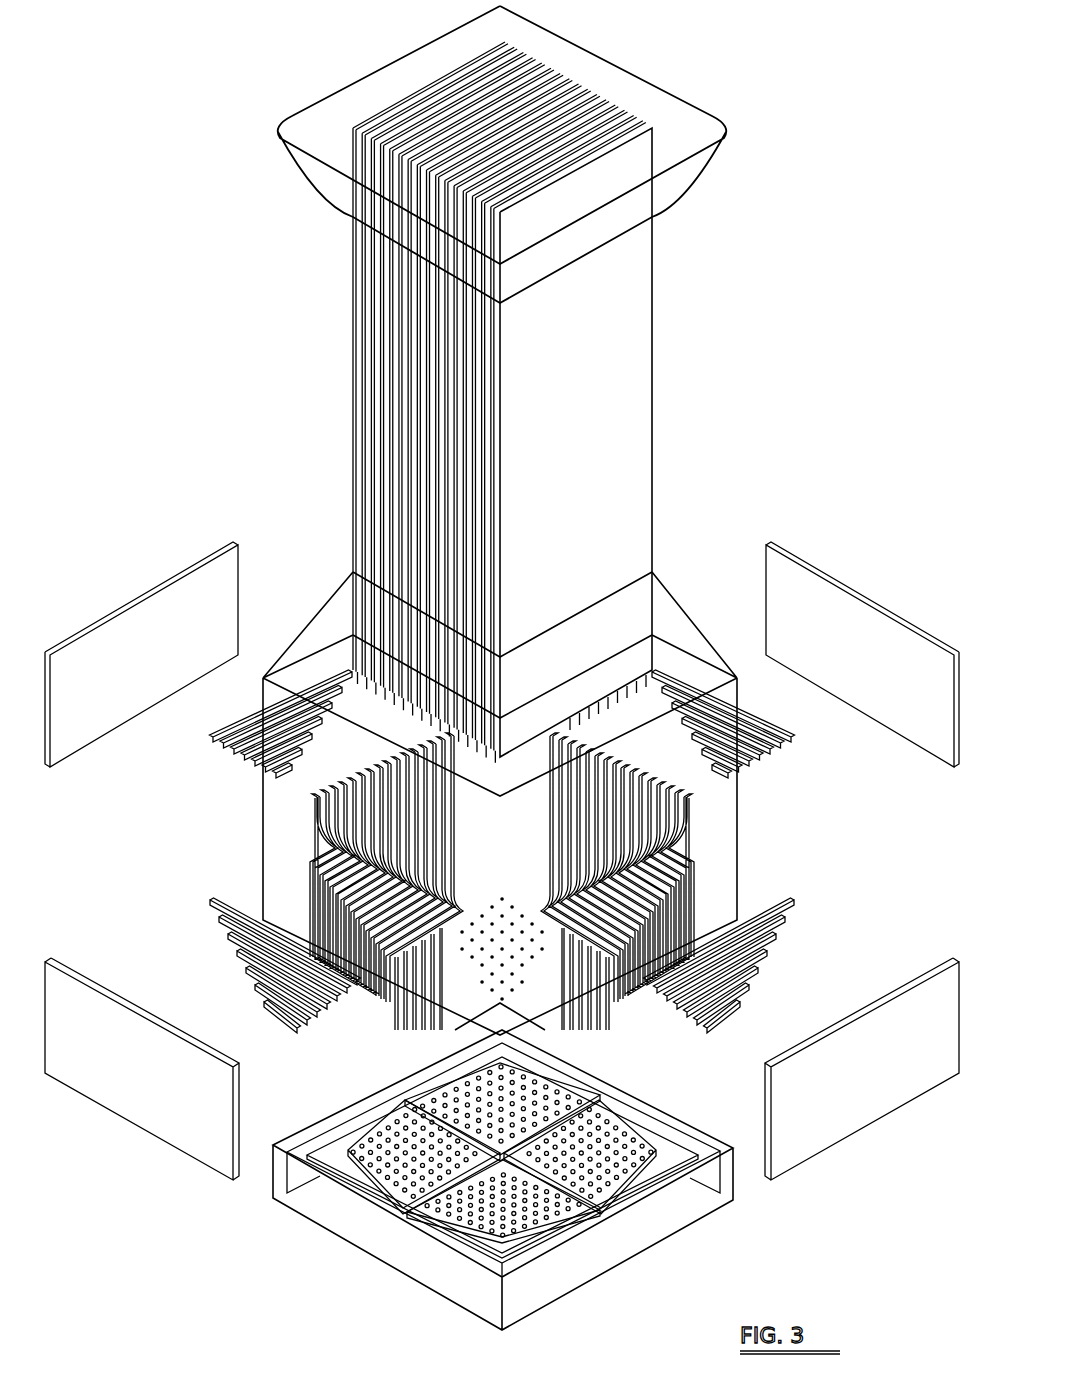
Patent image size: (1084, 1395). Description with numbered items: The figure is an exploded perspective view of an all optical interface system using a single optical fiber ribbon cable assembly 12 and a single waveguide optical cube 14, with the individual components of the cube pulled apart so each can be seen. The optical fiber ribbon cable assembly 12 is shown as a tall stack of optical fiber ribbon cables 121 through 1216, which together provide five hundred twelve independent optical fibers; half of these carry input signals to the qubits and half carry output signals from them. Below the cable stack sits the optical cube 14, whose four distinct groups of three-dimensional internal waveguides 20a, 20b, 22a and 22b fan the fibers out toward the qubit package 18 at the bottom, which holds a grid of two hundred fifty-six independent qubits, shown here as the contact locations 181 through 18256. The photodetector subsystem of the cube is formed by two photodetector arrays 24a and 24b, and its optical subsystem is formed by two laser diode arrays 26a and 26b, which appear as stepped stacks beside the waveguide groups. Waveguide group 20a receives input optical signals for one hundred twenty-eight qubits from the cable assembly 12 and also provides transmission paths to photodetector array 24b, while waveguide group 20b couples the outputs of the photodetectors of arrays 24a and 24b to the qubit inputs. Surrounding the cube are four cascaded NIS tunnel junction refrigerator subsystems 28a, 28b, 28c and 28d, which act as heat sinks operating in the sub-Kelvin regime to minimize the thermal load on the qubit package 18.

The optical fiber ribbon cable assembly 12 is at (315, 313).
The optical fiber ribbon cable 121 is at (478, 56).
The optical fiber ribbon cable 1216 is at (647, 143).
The waveguide optical cube 14 is at (305, 876).
The qubit package 18 is at (680, 1180).
The contact pads 181 is at (430, 1168).
The contact pads 18256 is at (503, 1201).
The internal waveguide group 20a is at (395, 810).
The internal waveguide group 20b is at (410, 990).
The internal waveguide group 22a is at (605, 808).
The internal waveguide group 22b is at (570, 995).
The photodetector array 24a is at (232, 722).
The photodetector array 24b is at (270, 950).
The laser diode array 26a is at (768, 722).
The laser diode array 26b is at (745, 950).
The NIS tunnel junction refrigerator subsystem 28a is at (165, 620).
The NIS tunnel junction refrigerator subsystem 28b is at (80, 1012).
The NIS tunnel junction refrigerator subsystem 28c is at (935, 1010).
The NIS tunnel junction refrigerator subsystem 28d is at (860, 622).